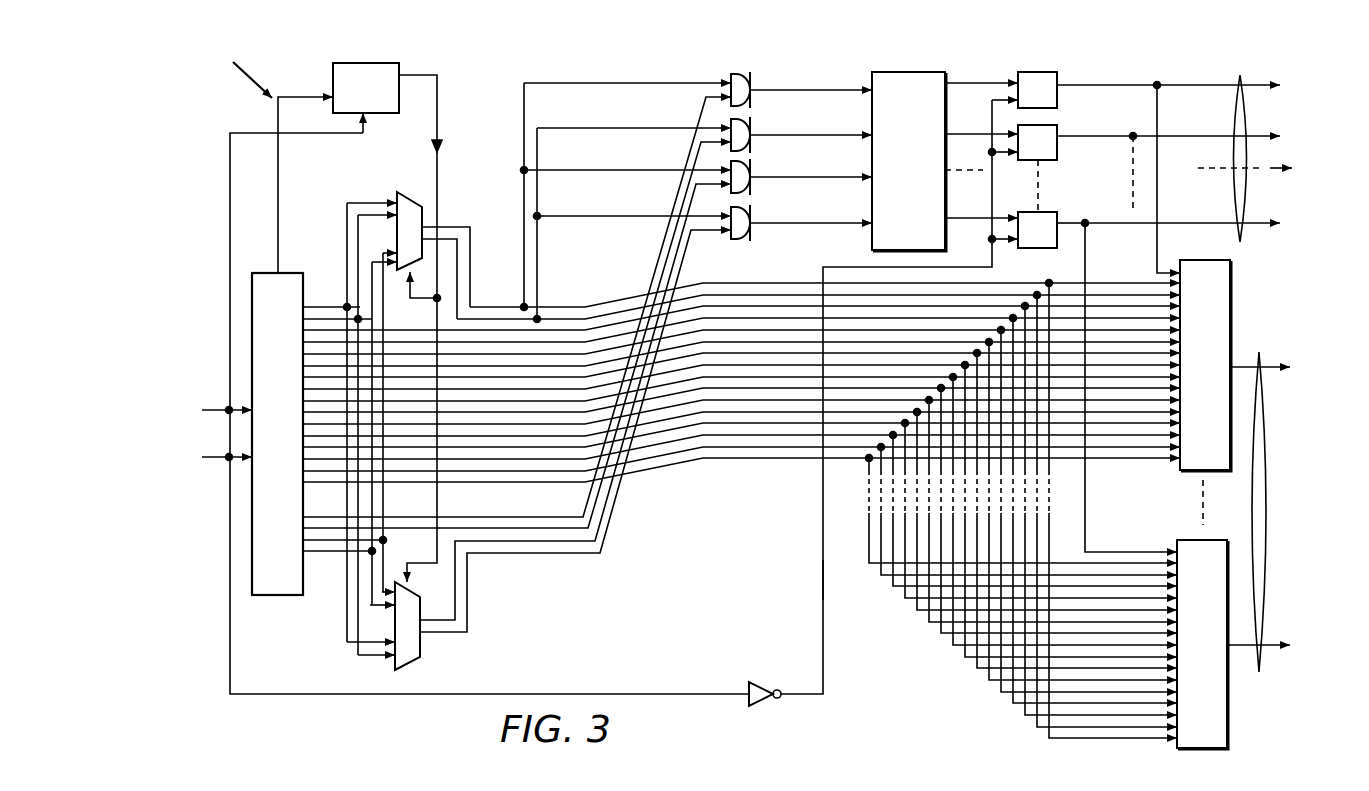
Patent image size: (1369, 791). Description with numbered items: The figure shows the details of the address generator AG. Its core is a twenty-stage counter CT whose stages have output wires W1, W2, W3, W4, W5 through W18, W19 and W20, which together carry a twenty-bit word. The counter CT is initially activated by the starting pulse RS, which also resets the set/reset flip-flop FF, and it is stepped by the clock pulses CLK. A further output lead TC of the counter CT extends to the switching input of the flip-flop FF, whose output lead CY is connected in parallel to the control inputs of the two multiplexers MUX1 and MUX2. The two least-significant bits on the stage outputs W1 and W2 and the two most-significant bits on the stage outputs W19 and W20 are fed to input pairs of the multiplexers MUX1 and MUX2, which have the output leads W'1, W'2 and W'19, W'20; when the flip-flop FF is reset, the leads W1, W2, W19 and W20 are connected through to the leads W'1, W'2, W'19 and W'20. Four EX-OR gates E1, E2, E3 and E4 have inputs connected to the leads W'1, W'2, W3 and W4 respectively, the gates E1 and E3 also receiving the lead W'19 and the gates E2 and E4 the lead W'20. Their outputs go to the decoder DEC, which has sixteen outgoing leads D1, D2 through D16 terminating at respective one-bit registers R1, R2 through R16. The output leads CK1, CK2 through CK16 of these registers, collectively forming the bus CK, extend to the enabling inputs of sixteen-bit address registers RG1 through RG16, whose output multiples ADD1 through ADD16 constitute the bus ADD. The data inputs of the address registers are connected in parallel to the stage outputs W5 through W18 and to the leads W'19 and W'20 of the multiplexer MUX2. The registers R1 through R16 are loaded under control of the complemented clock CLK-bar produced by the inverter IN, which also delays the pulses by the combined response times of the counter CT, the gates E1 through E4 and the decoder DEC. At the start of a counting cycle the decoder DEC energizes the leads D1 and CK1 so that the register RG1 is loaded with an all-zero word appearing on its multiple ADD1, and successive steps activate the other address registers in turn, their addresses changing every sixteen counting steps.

The 20-stage counter CT is at (273, 597).
The starting pulse RS is at (216, 405).
The clock pulses CLK is at (212, 463).
The output lead TC is at (280, 166).
The flip-flop FF is at (399, 92).
The address generator AG is at (243, 70).
The output lead CY is at (438, 97).
The multiplexer MUX2 is at (410, 197).
The multiplexer MUX1 is at (420, 655).
The stage output W20 is at (333, 305).
The stage output W19 is at (316, 317).
The output lead W'20 is at (453, 242).
The output lead W'19 is at (465, 272).
The stage output W18 is at (557, 329).
The stage output W5 is at (548, 485).
The stage output W4 is at (488, 517).
The stage output W3 is at (405, 527).
The stage output W2 is at (332, 542).
The stage output W1 is at (315, 553).
The output lead W'2 is at (575, 402).
The output lead W'1 is at (575, 431).
The EX-OR gate E4 is at (752, 100).
The EX-OR gate E3 is at (752, 145).
The EX-OR gate E2 is at (752, 187).
The EX-OR gate E1 is at (752, 233).
The decoder DEC is at (926, 135).
The outgoing lead D1 is at (968, 79).
The outgoing lead D2 is at (965, 131).
The outgoing lead D16 is at (965, 215).
The 1-bit register R1 is at (1058, 77).
The 1-bit register R2 is at (1057, 150).
The 1-bit register R16 is at (1058, 215).
The output lead CK1 is at (1236, 88).
The output lead CK2 is at (1226, 139).
The output lead CK16 is at (1205, 226).
The bus CK is at (1232, 193).
The 16-bit address register RG1 is at (1231, 292).
The 16-bit address register RG16 is at (1228, 716).
The output multiple ADD1 is at (1285, 369).
The output multiple ADD16 is at (1288, 647).
The bus ADD is at (1268, 540).
The inverter IN is at (760, 679).
The complement of clock pulses CLK-bar is at (822, 558).